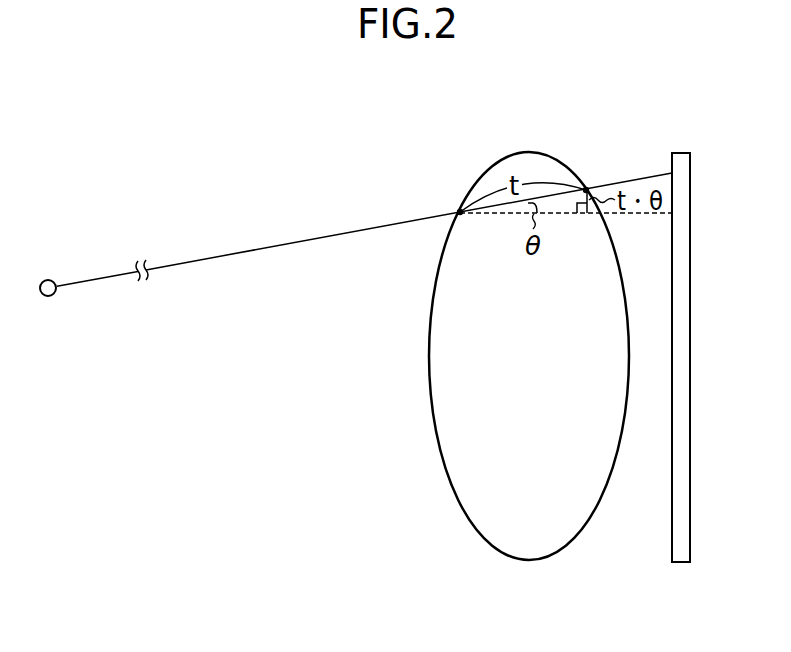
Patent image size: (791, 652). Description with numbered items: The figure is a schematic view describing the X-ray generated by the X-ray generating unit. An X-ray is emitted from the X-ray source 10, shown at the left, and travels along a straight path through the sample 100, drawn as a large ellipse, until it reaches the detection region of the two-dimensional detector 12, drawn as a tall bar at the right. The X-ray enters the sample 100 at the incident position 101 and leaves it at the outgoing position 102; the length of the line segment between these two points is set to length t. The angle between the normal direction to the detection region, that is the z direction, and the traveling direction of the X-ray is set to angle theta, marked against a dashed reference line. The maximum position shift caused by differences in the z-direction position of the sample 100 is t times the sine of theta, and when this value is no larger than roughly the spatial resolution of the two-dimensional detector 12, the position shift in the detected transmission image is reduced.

The X-ray source 10 is at (48, 280).
The two-dimensional detector 12 is at (682, 153).
The sample 100 is at (528, 562).
The incident position 101 is at (458, 211).
The outgoing position 102 is at (587, 189).